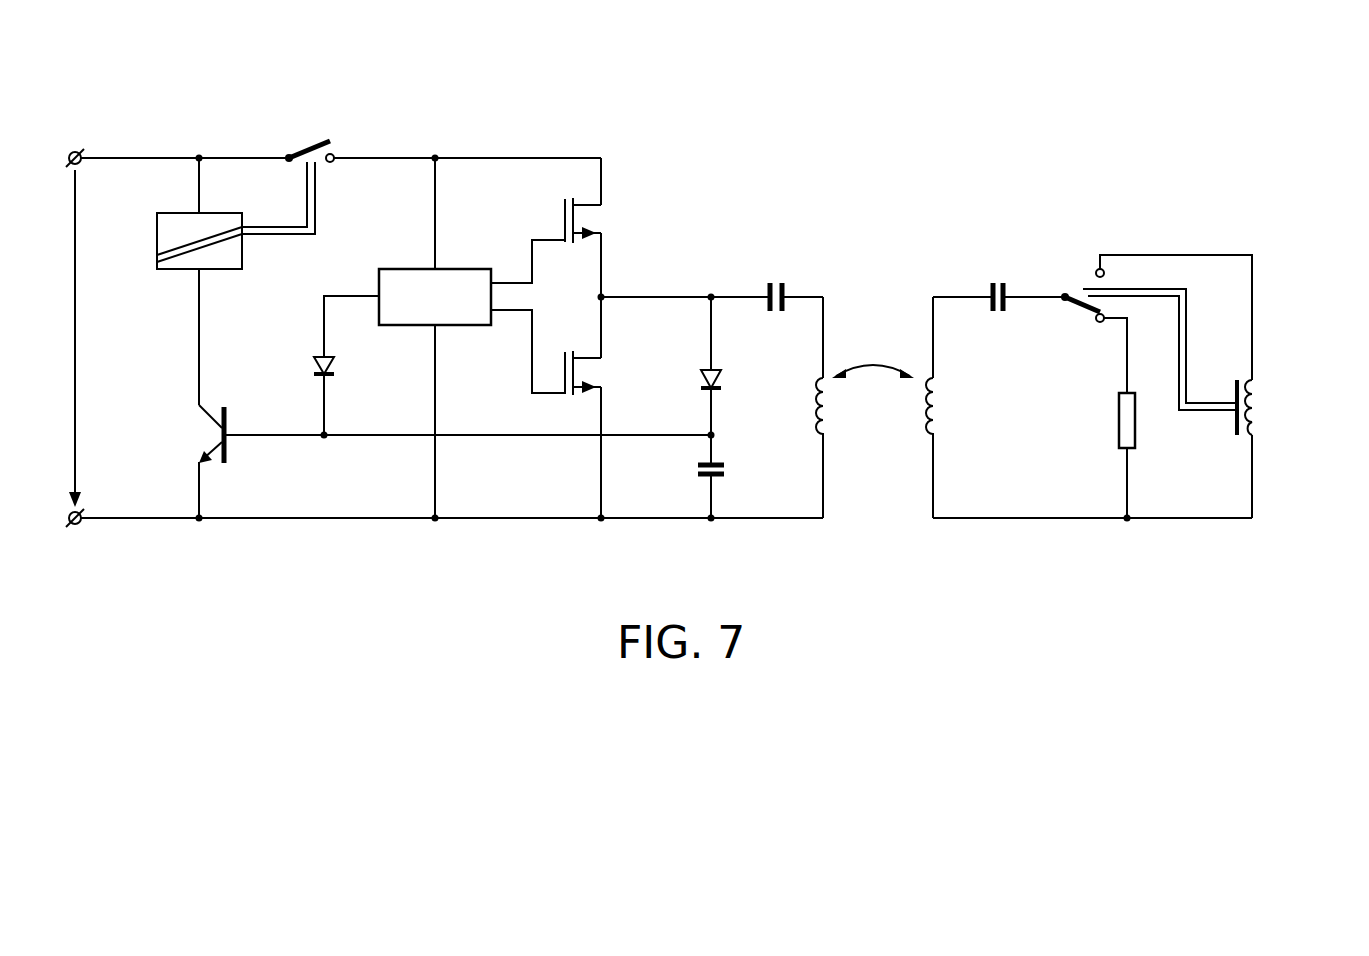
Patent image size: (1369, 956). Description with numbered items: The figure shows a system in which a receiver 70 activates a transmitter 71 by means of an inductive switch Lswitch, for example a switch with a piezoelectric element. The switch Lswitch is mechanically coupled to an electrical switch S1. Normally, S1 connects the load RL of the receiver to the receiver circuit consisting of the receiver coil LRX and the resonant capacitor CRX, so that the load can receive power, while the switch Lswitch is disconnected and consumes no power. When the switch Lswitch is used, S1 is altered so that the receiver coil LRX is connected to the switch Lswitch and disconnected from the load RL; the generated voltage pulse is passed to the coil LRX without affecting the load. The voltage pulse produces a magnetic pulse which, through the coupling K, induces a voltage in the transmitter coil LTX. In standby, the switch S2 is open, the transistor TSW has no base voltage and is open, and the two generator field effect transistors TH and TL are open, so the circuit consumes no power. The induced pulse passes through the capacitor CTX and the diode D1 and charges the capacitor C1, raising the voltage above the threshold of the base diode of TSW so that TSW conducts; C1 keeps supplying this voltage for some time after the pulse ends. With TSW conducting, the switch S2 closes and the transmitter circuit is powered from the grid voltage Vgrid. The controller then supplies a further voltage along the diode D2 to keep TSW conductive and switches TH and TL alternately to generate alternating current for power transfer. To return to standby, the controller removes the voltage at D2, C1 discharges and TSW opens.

The transmitter circuit 71 is at (671, 124).
The receiver circuit 70 is at (1019, 124).
The switch S2 is at (318, 136).
The grid voltage Vgrid is at (100, 338).
The transistor TSW is at (210, 433).
The diode D2 is at (336, 362).
The high-side field effect transistor TH is at (602, 222).
The low-side field effect transistor TL is at (602, 375).
The transmitter capacitor CTX is at (780, 280).
The diode D1 is at (722, 377).
The capacitor C1 is at (726, 470).
The coupling K is at (873, 360).
The transmitter coil LTX is at (824, 410).
The receiver coil LRX is at (934, 410).
The resonant capacitor CRX is at (1002, 280).
The electrical switch S1 is at (1078, 308).
The load RL is at (1118, 428).
The inductive switch Lswitch is at (1284, 407).